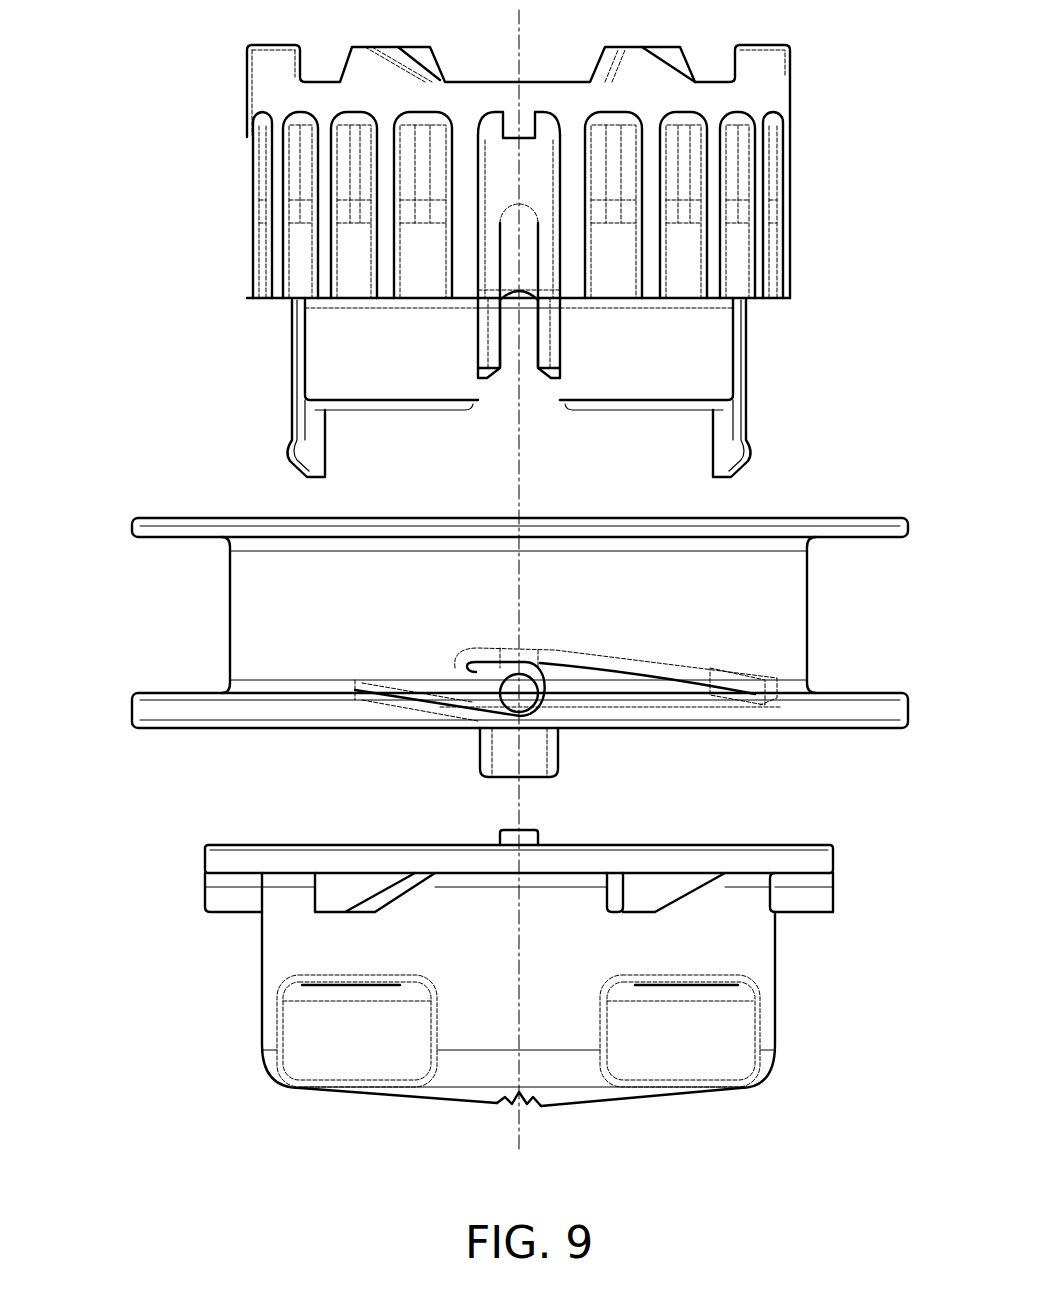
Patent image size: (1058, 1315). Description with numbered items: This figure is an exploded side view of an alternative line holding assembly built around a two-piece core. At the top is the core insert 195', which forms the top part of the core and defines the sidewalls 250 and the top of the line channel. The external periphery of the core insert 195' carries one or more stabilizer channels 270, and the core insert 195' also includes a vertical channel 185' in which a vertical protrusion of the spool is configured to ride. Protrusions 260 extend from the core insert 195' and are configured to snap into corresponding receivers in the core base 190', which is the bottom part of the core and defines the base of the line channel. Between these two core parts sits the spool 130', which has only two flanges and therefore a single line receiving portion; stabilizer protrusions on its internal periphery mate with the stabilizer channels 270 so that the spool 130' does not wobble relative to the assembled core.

The core insert 195' is at (593, 219).
The vertical channel 185' is at (565, 183).
The stabilizer channels 270 is at (772, 162).
The sidewalls 250 is at (493, 376).
The protrusions 260 is at (308, 450).
The spool 130' is at (477, 634).
The core base 190' is at (508, 968).